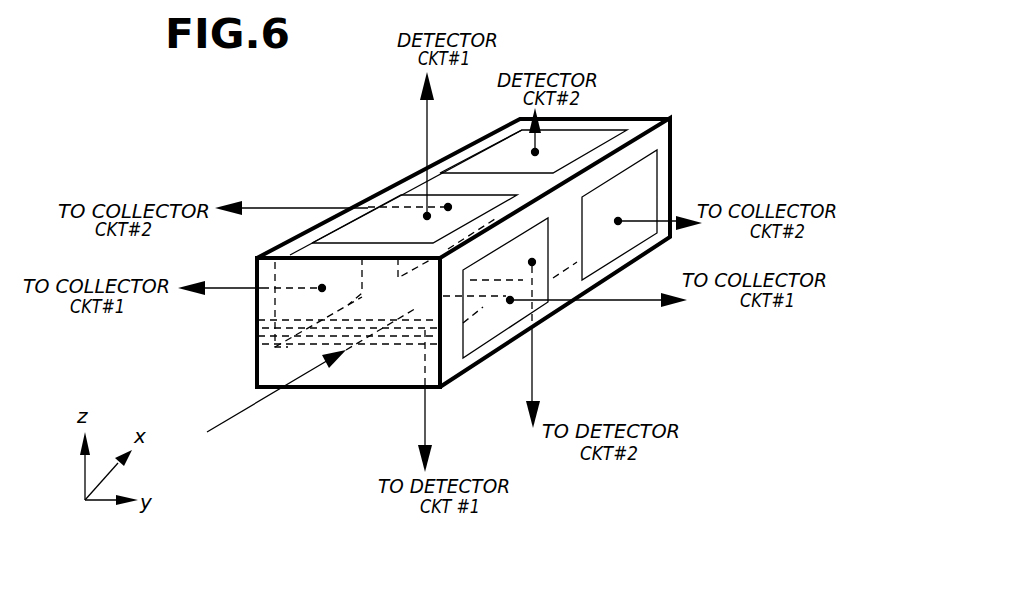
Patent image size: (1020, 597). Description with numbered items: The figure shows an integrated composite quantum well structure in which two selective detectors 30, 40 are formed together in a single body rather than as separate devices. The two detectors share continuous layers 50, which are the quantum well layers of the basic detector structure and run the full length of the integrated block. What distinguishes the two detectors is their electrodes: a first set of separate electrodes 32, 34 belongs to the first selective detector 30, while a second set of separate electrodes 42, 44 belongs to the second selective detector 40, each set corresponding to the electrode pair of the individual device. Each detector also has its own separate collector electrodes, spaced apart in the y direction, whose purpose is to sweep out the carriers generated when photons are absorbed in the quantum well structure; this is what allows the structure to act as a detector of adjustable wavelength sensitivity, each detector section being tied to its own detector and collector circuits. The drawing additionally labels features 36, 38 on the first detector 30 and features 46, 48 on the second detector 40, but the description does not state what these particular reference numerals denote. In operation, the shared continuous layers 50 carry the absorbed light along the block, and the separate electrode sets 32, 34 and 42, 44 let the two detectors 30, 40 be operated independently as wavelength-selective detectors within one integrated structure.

The selective detector 30 is at (368, 186).
The electrode 32 is at (409, 238).
The electrode 34 is at (318, 367).
The first side aperture 36 is at (522, 273).
The inner wall edge 38 is at (293, 253).
The selective detector 40 is at (451, 140).
The electrode 42 is at (569, 161).
The electrode 44 is at (606, 240).
The second side aperture 46 is at (650, 205).
The rear wall edge 48 is at (420, 183).
The continuous layers 50 is at (246, 320).